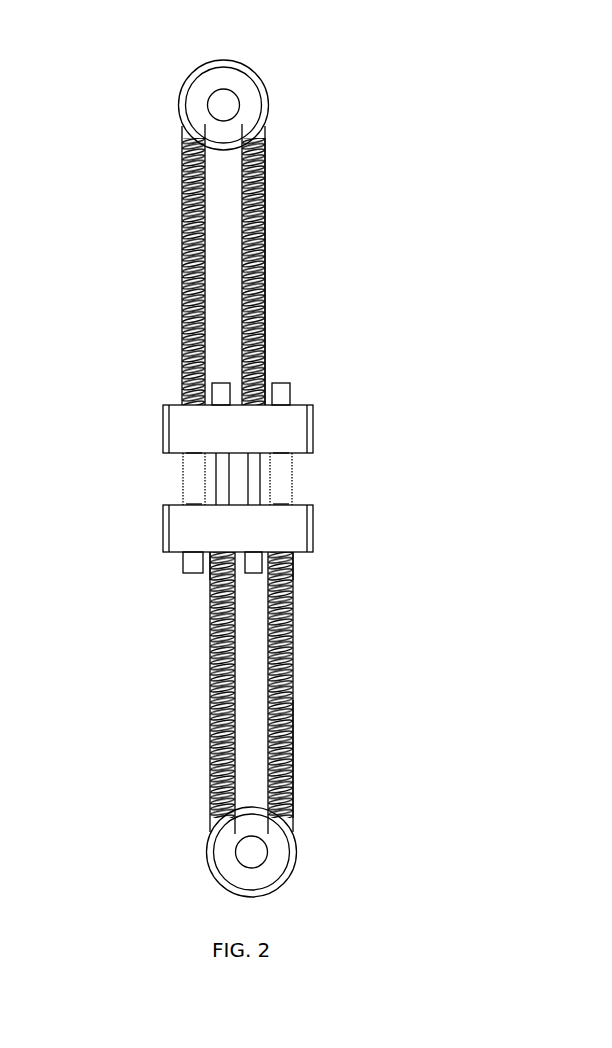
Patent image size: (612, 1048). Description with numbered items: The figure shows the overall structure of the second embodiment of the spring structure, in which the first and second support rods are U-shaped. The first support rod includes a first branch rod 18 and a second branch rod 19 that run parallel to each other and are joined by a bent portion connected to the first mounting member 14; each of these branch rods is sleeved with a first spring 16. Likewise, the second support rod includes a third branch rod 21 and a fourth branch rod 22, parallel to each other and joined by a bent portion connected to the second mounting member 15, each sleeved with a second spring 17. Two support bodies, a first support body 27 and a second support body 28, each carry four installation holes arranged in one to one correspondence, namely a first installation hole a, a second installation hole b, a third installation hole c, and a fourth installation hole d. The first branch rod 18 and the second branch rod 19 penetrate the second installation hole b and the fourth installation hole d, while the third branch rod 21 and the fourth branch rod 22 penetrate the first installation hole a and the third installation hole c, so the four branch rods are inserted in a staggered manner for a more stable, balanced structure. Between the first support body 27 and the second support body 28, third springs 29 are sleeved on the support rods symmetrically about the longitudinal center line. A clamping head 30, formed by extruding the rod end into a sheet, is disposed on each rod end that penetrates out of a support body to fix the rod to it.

The first mounting member 14 is at (242, 100).
The second mounting member 15 is at (280, 858).
The first spring 16 is at (267, 250).
The second spring 17 is at (293, 700).
The first branch rod 18 is at (298, 190).
The second branch rod 19 is at (170, 247).
The third branch rod 21 is at (317, 750).
The fourth branch rod 22 is at (190, 742).
The first support body 27 is at (286, 430).
The second support body 28 is at (292, 530).
The third spring 29 is at (195, 480).
The clamping head 30 is at (286, 383).
The first installation hole a is at (285, 553).
The second installation hole b is at (290, 572).
The third installation hole c is at (213, 562).
The fourth installation hole d is at (188, 554).